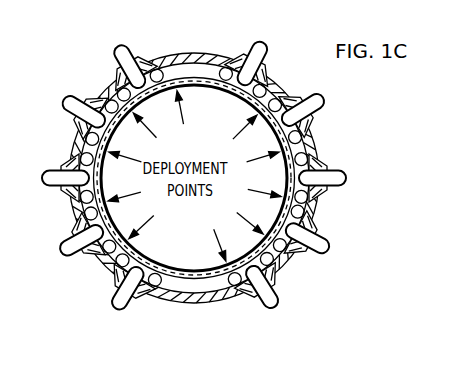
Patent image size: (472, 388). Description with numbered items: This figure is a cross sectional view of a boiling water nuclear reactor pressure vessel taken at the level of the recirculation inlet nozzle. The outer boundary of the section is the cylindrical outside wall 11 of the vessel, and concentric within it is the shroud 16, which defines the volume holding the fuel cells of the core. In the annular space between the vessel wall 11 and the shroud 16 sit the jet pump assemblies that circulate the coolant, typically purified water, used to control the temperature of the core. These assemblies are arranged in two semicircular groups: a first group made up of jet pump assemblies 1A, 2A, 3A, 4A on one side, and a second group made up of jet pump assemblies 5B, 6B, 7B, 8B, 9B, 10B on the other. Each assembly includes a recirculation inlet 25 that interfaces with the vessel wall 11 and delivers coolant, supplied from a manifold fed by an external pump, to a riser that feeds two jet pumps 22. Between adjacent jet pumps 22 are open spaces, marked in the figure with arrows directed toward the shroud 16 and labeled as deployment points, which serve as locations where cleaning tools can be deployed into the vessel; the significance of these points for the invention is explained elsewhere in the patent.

The jet pump assembly 1A is at (260, 56).
The jet pump assembly 2A is at (307, 110).
The jet pump assembly 3A is at (334, 178).
The jet pump assembly 4A is at (311, 238).
The jet pump assembly 5B is at (262, 292).
The jet pump assembly 6B is at (127, 296).
The jet pump assembly 7B is at (75, 240).
The jet pump assembly 8B is at (54, 178).
The jet pump assembly 9B is at (80, 111).
The jet pump assembly 10B is at (129, 62).
The outside wall 11 is at (318, 152).
The shroud 16 is at (149, 266).
The jet pump 22 is at (238, 57).
The recirculation inlet 25 is at (268, 58).